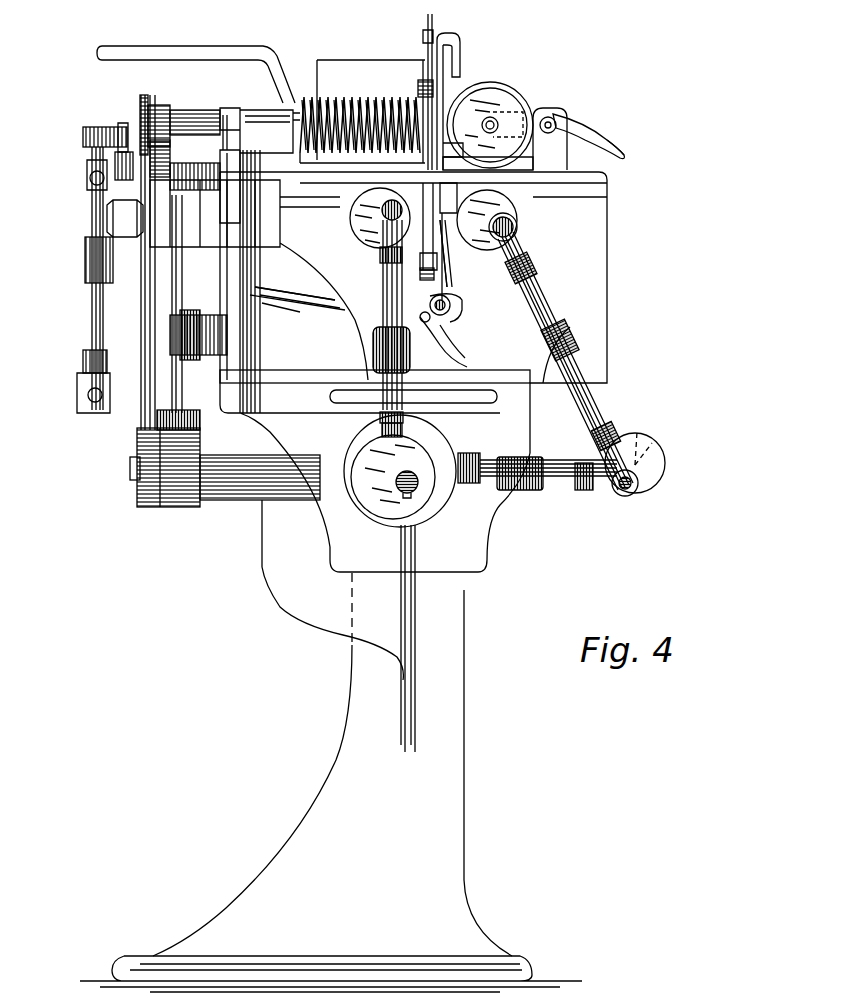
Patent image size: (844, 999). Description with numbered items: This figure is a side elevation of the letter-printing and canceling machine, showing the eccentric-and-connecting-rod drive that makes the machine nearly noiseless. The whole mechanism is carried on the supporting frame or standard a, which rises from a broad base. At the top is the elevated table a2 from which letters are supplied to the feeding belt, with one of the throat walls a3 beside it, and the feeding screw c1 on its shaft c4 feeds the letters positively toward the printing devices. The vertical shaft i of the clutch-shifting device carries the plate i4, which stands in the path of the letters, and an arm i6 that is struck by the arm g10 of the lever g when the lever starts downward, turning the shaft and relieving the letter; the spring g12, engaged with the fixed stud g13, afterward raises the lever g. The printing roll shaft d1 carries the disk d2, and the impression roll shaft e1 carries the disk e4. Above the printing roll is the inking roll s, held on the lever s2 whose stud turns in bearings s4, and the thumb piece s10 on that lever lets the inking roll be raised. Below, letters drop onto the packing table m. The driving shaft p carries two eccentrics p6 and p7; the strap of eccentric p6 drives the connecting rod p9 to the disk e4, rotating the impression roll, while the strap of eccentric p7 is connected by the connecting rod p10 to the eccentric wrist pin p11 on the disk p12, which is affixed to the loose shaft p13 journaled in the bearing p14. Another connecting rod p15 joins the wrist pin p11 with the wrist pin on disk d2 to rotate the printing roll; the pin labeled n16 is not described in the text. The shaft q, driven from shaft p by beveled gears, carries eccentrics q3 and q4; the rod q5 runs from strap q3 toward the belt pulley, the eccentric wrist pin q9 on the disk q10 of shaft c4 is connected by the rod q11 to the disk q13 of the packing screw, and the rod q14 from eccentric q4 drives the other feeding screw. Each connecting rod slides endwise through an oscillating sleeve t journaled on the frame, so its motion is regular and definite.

The supporting frame a is at (343, 572).
The elevated table a2 is at (194, 53).
The throat wall a3 is at (277, 77).
The feeding screw c1 is at (313, 100).
The feeding screw shaft c4 is at (300, 118).
The vertical shaft i is at (428, 55).
The plate i4 is at (418, 90).
The arm i6 is at (440, 262).
The inking roll s is at (500, 88).
The lever s2 is at (548, 114).
The bearings s4 is at (560, 143).
The thumb piece s10 is at (600, 138).
The disk d2 is at (500, 195).
The printing roll shaft d1 is at (467, 253).
The disk e4 is at (352, 220).
The impression roll shaft e1 is at (386, 228).
The lever g is at (297, 310).
The arm g10 is at (440, 273).
The spring g12 is at (455, 303).
The fixed stud g13 is at (447, 325).
The crank pin n16 is at (518, 232).
The connecting rod p15 is at (555, 300).
The sleeve t is at (86, 262).
The eccentric p7 is at (433, 442).
The eccentric p6 is at (367, 497).
The driving shaft p is at (417, 488).
The connecting rod p9 is at (385, 386).
The packing table m is at (296, 383).
The connecting rod p10 is at (548, 483).
The eccentric wrist pin p11 is at (623, 496).
The disk p12 is at (655, 470).
The loose shaft p13 is at (646, 437).
The bearing p14 is at (652, 443).
The disk q10 is at (142, 104).
The eccentric wrist pin q9 is at (83, 137).
The rod q11 is at (100, 216).
The disk q13 is at (107, 352).
The rod q5 is at (140, 407).
The eccentric q3 is at (137, 433).
The shaft q is at (133, 473).
The eccentric q4 is at (260, 498).
The rod q14 is at (200, 418).